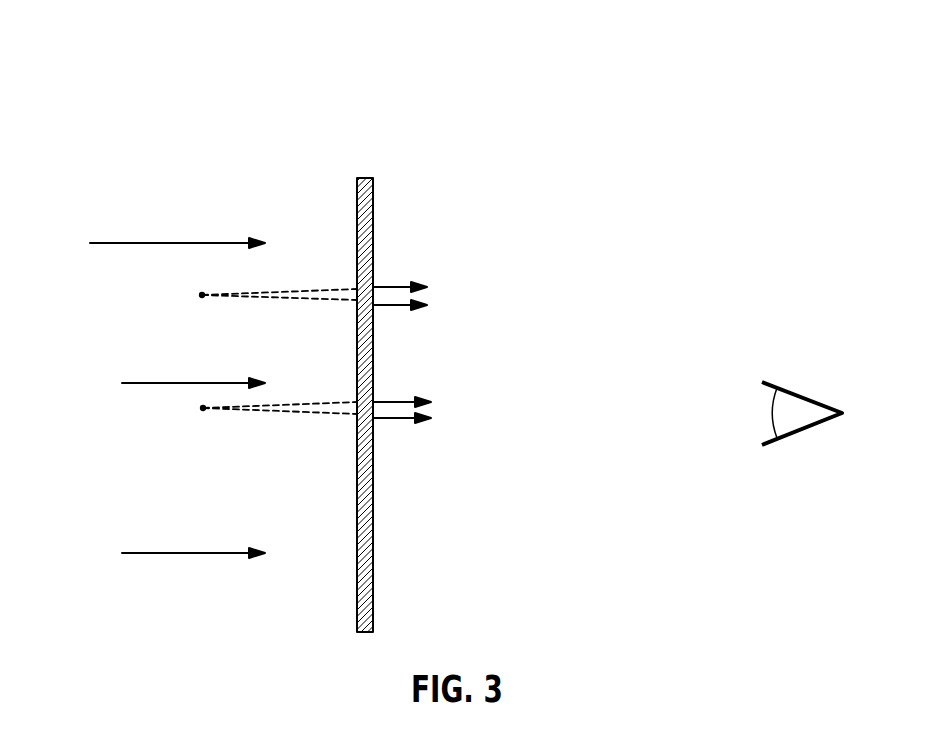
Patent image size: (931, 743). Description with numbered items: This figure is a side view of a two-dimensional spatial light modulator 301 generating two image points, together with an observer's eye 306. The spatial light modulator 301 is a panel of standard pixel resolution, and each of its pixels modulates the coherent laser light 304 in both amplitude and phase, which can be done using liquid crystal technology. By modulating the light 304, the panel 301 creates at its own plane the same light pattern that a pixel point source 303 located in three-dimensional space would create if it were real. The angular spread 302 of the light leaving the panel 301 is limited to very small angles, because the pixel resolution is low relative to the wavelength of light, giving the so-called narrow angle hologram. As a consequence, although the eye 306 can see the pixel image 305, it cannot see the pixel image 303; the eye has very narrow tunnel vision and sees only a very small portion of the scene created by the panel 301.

The spatial light modulator 301 is at (365, 178).
The angular spread 302 is at (402, 307).
The pixel point source 303 is at (202, 295).
The coherent laser light 304 is at (142, 553).
The pixel image 305 is at (203, 410).
The observer's eye 306 is at (810, 398).